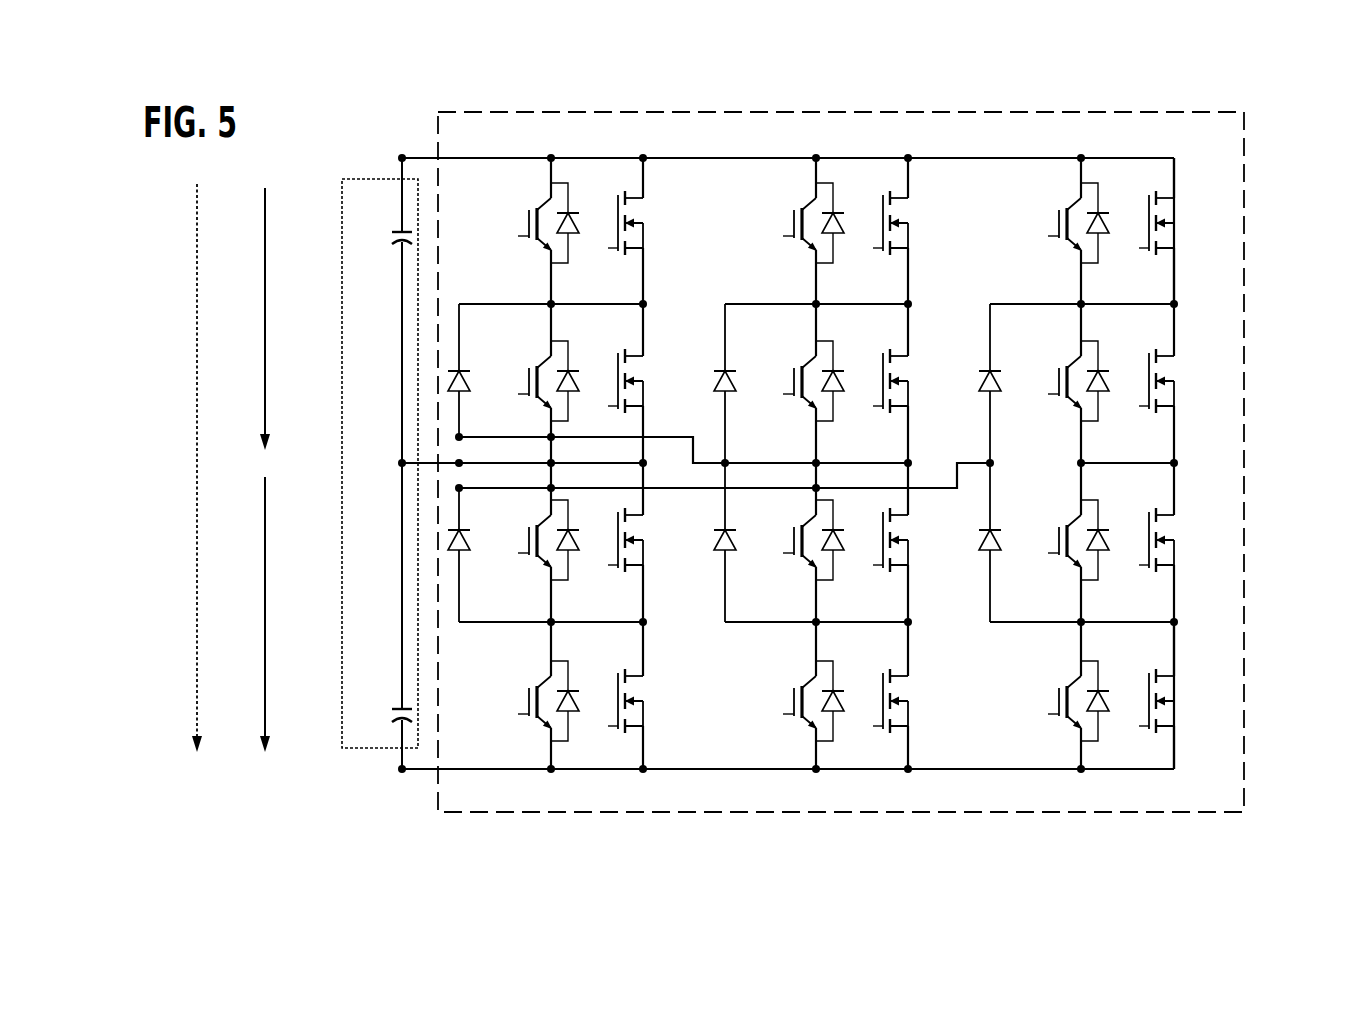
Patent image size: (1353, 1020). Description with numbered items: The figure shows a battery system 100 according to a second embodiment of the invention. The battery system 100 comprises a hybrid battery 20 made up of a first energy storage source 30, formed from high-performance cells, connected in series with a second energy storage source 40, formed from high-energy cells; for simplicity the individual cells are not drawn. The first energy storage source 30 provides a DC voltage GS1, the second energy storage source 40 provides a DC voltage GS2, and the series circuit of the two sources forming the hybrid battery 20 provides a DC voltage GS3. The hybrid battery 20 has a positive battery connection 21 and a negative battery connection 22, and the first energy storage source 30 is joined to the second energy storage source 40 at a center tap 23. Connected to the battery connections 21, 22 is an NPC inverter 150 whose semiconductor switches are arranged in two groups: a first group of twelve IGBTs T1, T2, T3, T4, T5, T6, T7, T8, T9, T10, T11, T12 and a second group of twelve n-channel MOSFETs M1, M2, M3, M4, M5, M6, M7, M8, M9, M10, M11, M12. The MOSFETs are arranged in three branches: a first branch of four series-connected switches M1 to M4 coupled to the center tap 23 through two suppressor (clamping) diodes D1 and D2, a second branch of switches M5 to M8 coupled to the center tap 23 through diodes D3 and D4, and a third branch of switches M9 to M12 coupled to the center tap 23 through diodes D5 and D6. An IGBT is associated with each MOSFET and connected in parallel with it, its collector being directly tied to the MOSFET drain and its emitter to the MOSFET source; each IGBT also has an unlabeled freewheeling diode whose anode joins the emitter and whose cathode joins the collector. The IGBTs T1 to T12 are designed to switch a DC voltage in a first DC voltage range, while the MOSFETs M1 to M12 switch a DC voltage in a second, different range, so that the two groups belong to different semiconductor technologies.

The battery system 100 is at (362, 114).
The hybrid battery 20 is at (357, 179).
The positive battery connection 21 is at (402, 154).
The negative battery connection 22 is at (402, 769).
The center tap 23 is at (402, 463).
The first energy storage source 30 is at (413, 234).
The second energy storage source 40 is at (412, 718).
The NPC inverter 150 is at (1244, 187).
The DC voltage GS1 is at (243, 319).
The DC voltage GS2 is at (243, 614).
The DC voltage GS3 is at (172, 468).
The first semiconductor switch T1 is at (539, 231).
The first semiconductor switch T2 is at (539, 383).
The first semiconductor switch T3 is at (539, 542).
The first semiconductor switch T4 is at (539, 695).
The first semiconductor switch T5 is at (804, 231).
The first semiconductor switch T6 is at (804, 383).
The first semiconductor switch T7 is at (804, 542).
The first semiconductor switch T8 is at (804, 695).
The first semiconductor switch T9 is at (1069, 231).
The first semiconductor switch T10 is at (1065, 383).
The first semiconductor switch T11 is at (1065, 542).
The first semiconductor switch T12 is at (1065, 695).
The second semiconductor switch M1 is at (644, 231).
The second semiconductor switch M2 is at (644, 383).
The second semiconductor switch M3 is at (644, 542).
The second semiconductor switch M4 is at (644, 695).
The second semiconductor switch M5 is at (909, 231).
The second semiconductor switch M6 is at (909, 383).
The second semiconductor switch M7 is at (909, 542).
The second semiconductor switch M8 is at (909, 695).
The second semiconductor switch M9 is at (1175, 231).
The second semiconductor switch M10 is at (1181, 383).
The second semiconductor switch M11 is at (1181, 542).
The second semiconductor switch M12 is at (1181, 695).
The suppressor diode D1 is at (469, 370).
The suppressor diode D2 is at (469, 555).
The suppressor diode D3 is at (735, 383).
The suppressor diode D4 is at (735, 542).
The suppressor diode D5 is at (1000, 383).
The suppressor diode D6 is at (1000, 542).